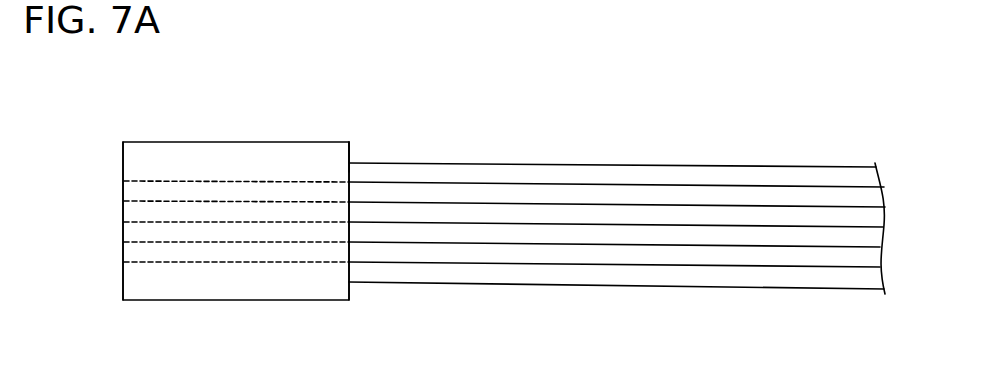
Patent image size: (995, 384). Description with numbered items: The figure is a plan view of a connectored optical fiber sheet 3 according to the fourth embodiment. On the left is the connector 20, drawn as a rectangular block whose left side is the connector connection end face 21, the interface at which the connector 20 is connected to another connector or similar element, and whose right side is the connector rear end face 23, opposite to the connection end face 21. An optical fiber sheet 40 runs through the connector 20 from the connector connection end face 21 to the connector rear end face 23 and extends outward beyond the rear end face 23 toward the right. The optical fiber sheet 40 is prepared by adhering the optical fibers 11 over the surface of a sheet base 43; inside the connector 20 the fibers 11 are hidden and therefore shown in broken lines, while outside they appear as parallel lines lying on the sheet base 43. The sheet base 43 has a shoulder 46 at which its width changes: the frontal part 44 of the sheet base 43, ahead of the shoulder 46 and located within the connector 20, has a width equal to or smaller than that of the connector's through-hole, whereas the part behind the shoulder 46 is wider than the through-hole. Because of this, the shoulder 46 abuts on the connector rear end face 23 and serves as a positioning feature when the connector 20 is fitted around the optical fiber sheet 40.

The connectored optical fiber sheet 3 is at (438, 137).
The optical fibers 11 is at (674, 258).
The connector 20 is at (202, 294).
The connector connection end face 21 is at (122, 291).
The connector rear end face 23 is at (349, 293).
The optical fiber sheet 40 is at (767, 101).
The sheet base 43 is at (747, 178).
The frontal part 44 is at (219, 180).
The shoulder 46 is at (350, 171).